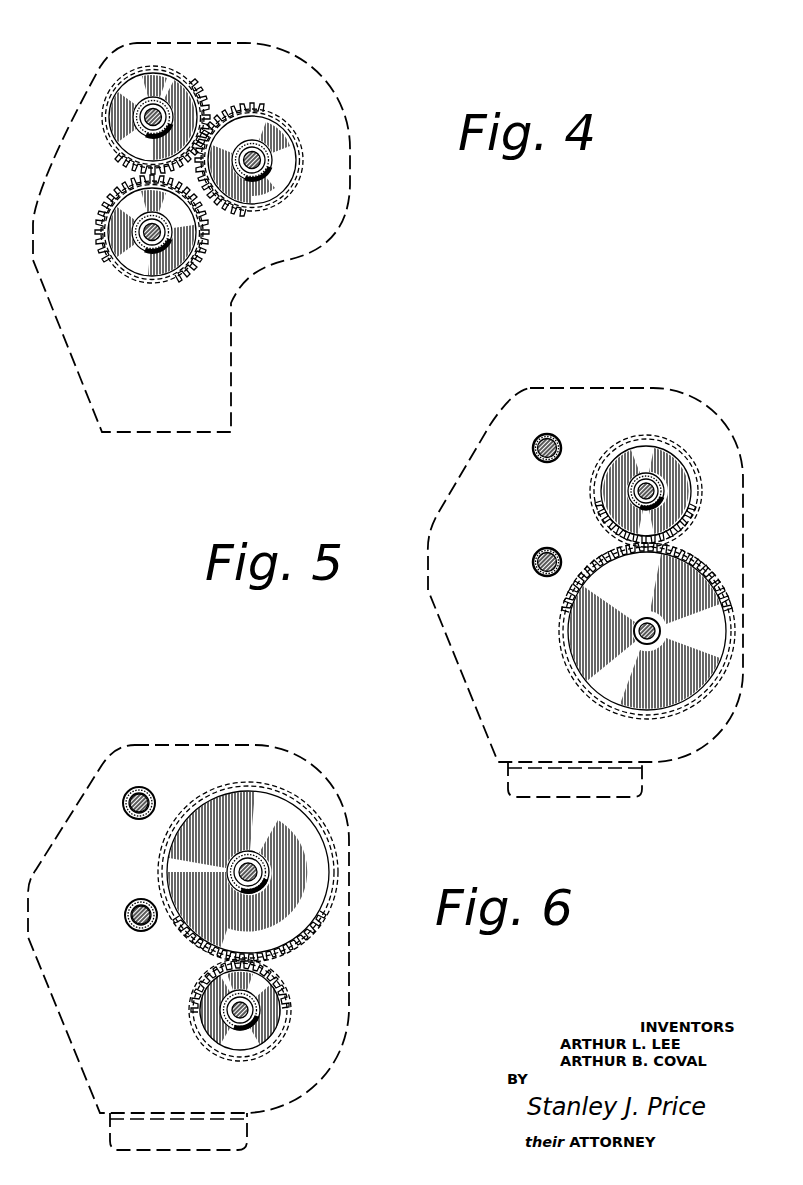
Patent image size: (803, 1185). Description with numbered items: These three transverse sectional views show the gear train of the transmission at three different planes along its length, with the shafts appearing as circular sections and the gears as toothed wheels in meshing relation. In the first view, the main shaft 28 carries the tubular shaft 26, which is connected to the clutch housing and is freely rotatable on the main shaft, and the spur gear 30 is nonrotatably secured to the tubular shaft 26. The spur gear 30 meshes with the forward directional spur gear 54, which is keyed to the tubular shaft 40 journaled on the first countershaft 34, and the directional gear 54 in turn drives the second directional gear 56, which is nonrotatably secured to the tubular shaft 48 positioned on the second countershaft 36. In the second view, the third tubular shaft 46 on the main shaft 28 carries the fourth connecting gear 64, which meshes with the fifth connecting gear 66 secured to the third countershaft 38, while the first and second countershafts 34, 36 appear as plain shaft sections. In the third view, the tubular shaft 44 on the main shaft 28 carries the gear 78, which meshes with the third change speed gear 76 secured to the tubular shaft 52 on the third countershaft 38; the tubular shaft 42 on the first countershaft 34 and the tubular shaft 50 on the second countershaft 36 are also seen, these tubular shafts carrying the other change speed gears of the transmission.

In FIG. 4, the tubular shaft 26 is at (268, 149).
In FIG. 4, the main shaft 28 is at (262, 161).
In FIG. 5, the main shaft 28 is at (655, 479).
In FIG. 6, the main shaft 28 is at (258, 866).
In FIG. 4, the spur gear 30 is at (256, 108).
In FIG. 4, the first countershaft 34 is at (170, 113).
In FIG. 5, the first countershaft 34 is at (553, 437).
In FIG. 6, the first countershaft 34 is at (156, 800).
In FIG. 4, the second countershaft 36 is at (143, 248).
In FIG. 5, the second countershaft 36 is at (537, 558).
In FIG. 6, the second countershaft 36 is at (132, 928).
In FIG. 5, the third countershaft 38 is at (633, 638).
In FIG. 6, the third countershaft 38 is at (250, 1017).
In FIG. 4, the tubular shaft 40 is at (166, 103).
In FIG. 6, the tubular shaft 42 is at (147, 795).
In FIG. 6, the tubular shaft 44 is at (260, 857).
In FIG. 5, the third tubular shaft 46 is at (658, 486).
In FIG. 4, the tubular shaft 48 is at (137, 240).
In FIG. 6, the tubular shaft 50 is at (129, 913).
In FIG. 6, the tubular shaft 52 is at (260, 1008).
In FIG. 4, the forward directional spur gear 54 is at (127, 153).
In FIG. 4, the second directional gear 56 is at (112, 192).
In FIG. 5, the fourth connecting gear 64 is at (688, 512).
In FIG. 5, the fifth connecting gear 66 is at (582, 602).
In FIG. 6, the third change speed gear 76 is at (284, 976).
In FIG. 6, the gear 78 is at (205, 935).